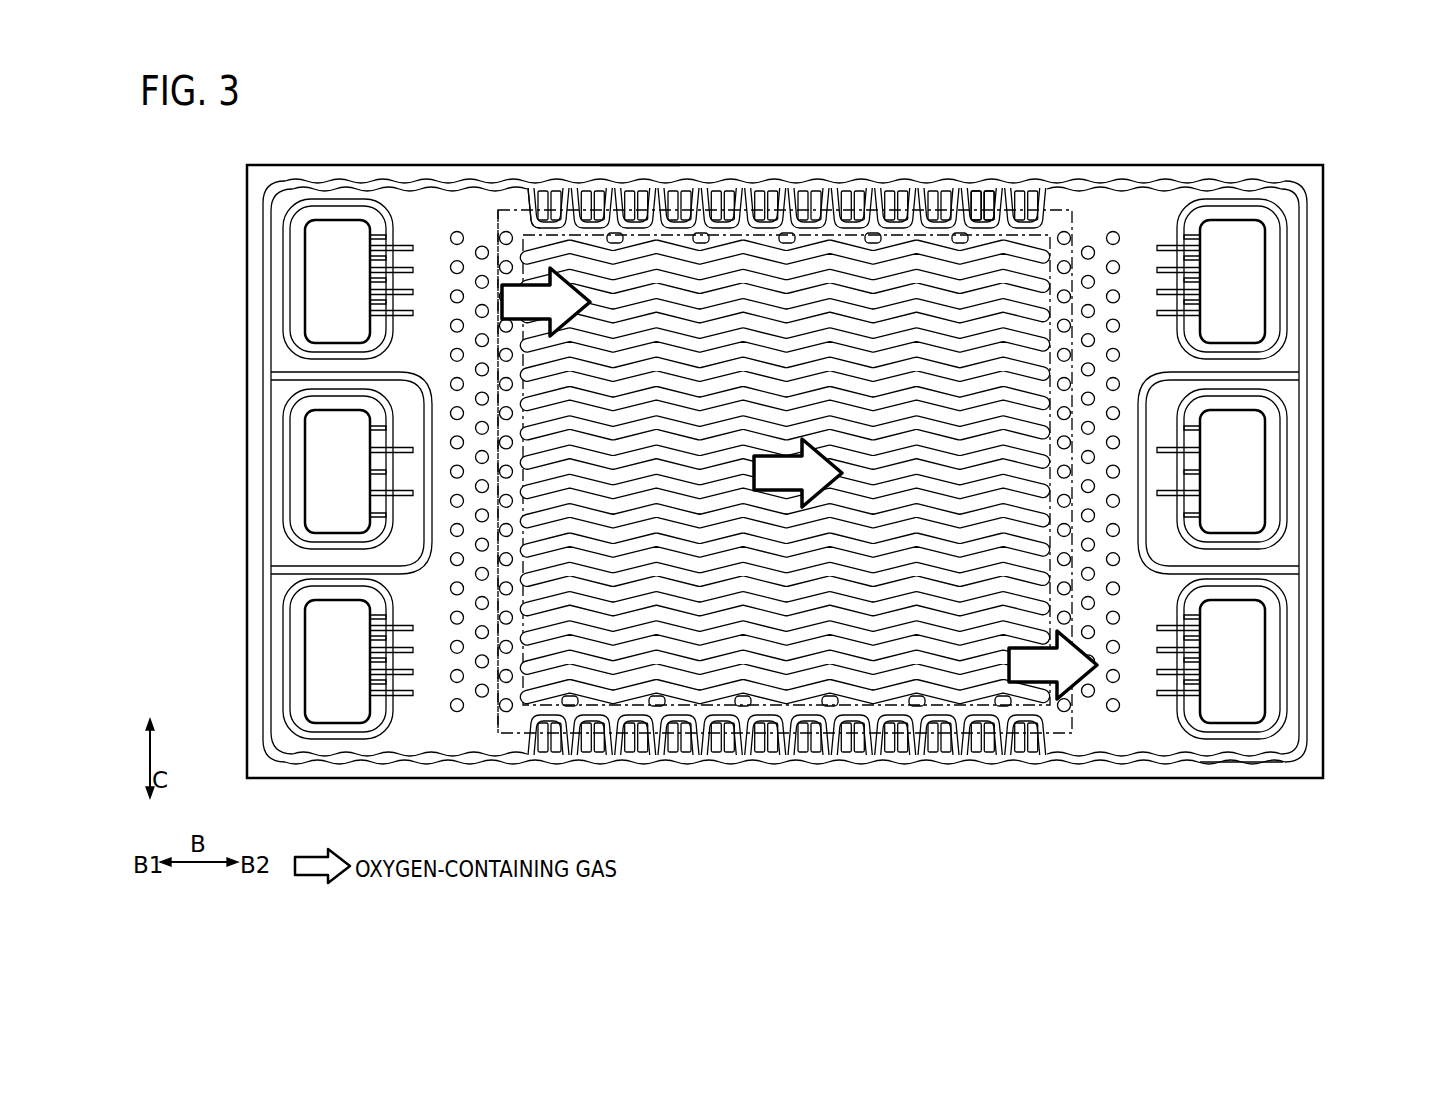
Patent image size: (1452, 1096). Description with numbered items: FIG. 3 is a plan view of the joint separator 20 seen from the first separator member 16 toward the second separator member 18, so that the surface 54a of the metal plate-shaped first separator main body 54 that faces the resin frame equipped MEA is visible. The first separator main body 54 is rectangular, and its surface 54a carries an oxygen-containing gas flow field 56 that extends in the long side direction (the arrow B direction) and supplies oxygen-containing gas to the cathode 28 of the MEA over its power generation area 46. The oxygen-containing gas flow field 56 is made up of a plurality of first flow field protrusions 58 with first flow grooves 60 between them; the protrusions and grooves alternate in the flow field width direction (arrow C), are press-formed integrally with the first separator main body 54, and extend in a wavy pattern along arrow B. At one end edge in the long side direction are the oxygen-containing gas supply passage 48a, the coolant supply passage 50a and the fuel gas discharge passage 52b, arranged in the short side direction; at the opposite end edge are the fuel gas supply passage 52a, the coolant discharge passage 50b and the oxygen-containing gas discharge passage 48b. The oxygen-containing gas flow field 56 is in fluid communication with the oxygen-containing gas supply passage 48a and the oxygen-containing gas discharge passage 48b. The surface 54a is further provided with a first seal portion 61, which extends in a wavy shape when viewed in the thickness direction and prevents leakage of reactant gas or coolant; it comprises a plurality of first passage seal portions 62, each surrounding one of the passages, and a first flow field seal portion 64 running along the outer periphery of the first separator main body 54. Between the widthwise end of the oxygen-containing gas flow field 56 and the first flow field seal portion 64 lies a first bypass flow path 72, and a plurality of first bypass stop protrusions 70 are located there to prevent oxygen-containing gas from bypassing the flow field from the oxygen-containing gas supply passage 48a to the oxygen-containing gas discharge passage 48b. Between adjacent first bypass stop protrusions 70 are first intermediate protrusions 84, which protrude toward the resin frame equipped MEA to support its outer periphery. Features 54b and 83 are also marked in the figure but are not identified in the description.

The joint separator 20 is at (1319, 100).
The first separator member 16 is at (637, 165).
The second separator member 18 is at (657, 165).
The first separator main body 54 is at (320, 181).
The surface 54a is at (548, 181).
The outer bead seal inner wall 54b is at (596, 187).
The oxygen-containing gas flow field 56 is at (780, 112).
The first flow field protrusions 58 is at (718, 268).
The first flow grooves 60 is at (752, 250).
The first bypass stop protrusions 70 is at (727, 866).
The first bypass flow path 72 is at (530, 218).
The connection channel 83 is at (531, 202).
The first intermediate protrusions 84 is at (987, 190).
The cathode 28 is at (1073, 225).
The power generation area 46 is at (793, 708).
The oxygen-containing gas supply passage 48a is at (325, 242).
The oxygen-containing gas discharge passage 48b is at (1258, 650).
The coolant supply passage 50a is at (318, 447).
The coolant discharge passage 50b is at (1250, 468).
The fuel gas supply passage 52a is at (1245, 270).
The fuel gas discharge passage 52b is at (325, 645).
The first passage seal portions 62 is at (290, 268).
The first flow field seal portion 64 is at (1222, 763).
The first seal portion 61 is at (1290, 828).